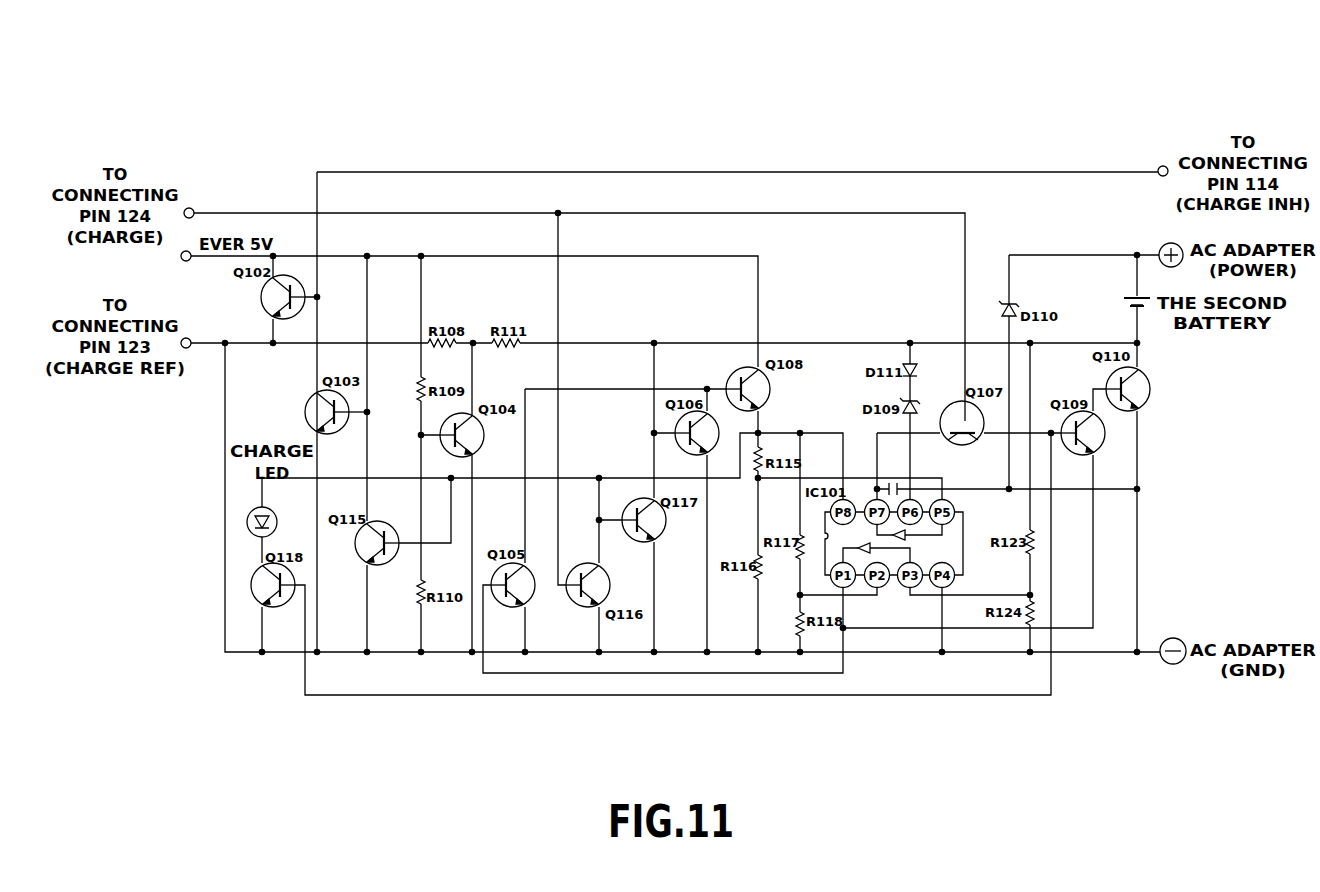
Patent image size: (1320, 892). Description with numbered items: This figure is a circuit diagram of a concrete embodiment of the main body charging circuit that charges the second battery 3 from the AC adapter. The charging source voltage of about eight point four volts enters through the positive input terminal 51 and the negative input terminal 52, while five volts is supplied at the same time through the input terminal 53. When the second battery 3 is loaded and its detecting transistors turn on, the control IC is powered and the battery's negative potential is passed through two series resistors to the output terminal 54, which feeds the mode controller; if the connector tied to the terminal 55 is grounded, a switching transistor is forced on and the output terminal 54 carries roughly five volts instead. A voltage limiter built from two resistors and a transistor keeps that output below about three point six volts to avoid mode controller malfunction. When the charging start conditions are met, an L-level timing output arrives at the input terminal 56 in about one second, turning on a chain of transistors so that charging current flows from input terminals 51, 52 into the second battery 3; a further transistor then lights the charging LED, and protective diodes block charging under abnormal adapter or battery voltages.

The second battery 3 is at (1126, 296).
The input terminal (+) 51 is at (1163, 246).
The input terminal (−) 52 is at (1166, 663).
The input terminal 53 is at (187, 262).
The output terminal 54 is at (188, 349).
The terminal 55 is at (1158, 167).
The input terminal 56 is at (193, 208).